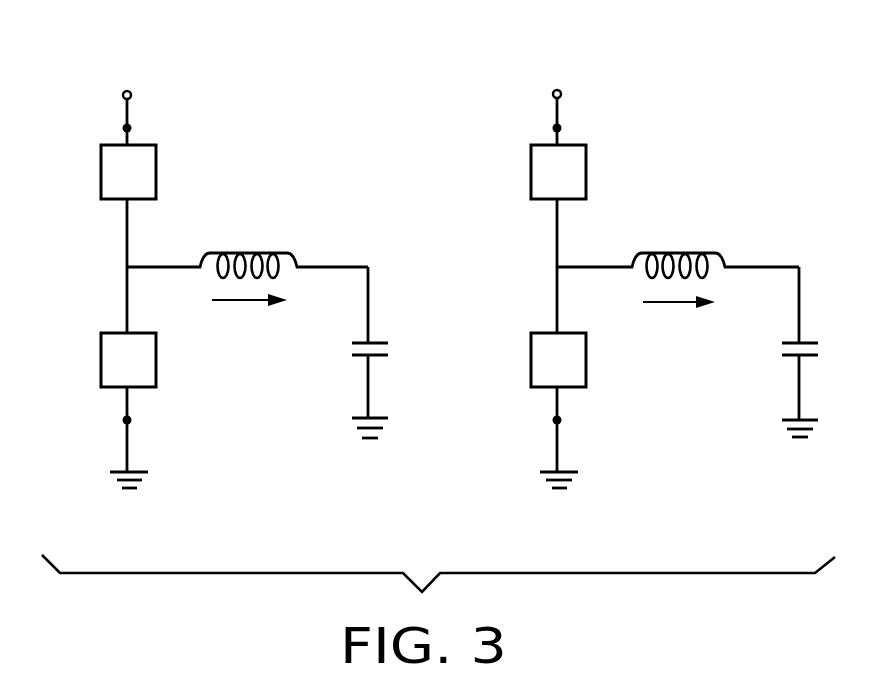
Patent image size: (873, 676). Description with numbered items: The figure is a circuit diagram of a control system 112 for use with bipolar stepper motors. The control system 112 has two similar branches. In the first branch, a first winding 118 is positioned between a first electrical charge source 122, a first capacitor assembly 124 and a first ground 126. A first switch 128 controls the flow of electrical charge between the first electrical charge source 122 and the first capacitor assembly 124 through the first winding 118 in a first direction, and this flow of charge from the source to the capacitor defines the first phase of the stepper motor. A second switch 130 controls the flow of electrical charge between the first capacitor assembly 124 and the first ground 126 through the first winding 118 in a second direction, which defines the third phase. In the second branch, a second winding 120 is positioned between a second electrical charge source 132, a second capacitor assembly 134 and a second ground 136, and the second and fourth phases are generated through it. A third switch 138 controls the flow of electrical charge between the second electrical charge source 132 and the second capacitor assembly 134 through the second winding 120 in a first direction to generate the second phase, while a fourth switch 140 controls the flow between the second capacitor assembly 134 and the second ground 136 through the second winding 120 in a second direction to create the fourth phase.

The control system 112 is at (768, 137).
The first winding 118 is at (290, 255).
The second winding 120 is at (722, 253).
The first electrical charge source 122 is at (153, 73).
The first capacitor assembly 124 is at (382, 357).
The first ground 126 is at (153, 478).
The first switch 128 is at (102, 147).
The second switch 130 is at (101, 353).
The second electrical charge source 132 is at (578, 79).
The second capacitor assembly 134 is at (780, 352).
The second ground 136 is at (580, 480).
The third switch 138 is at (586, 168).
The fourth switch 140 is at (586, 372).